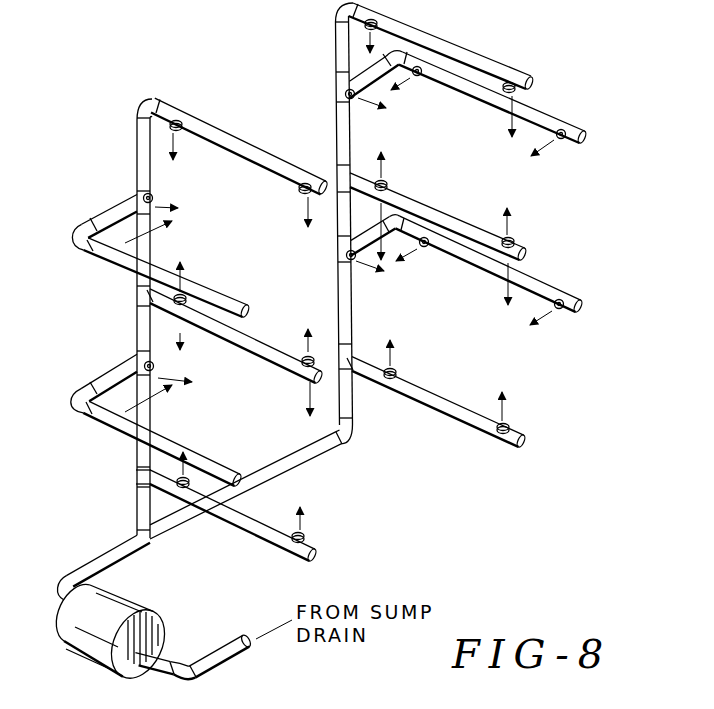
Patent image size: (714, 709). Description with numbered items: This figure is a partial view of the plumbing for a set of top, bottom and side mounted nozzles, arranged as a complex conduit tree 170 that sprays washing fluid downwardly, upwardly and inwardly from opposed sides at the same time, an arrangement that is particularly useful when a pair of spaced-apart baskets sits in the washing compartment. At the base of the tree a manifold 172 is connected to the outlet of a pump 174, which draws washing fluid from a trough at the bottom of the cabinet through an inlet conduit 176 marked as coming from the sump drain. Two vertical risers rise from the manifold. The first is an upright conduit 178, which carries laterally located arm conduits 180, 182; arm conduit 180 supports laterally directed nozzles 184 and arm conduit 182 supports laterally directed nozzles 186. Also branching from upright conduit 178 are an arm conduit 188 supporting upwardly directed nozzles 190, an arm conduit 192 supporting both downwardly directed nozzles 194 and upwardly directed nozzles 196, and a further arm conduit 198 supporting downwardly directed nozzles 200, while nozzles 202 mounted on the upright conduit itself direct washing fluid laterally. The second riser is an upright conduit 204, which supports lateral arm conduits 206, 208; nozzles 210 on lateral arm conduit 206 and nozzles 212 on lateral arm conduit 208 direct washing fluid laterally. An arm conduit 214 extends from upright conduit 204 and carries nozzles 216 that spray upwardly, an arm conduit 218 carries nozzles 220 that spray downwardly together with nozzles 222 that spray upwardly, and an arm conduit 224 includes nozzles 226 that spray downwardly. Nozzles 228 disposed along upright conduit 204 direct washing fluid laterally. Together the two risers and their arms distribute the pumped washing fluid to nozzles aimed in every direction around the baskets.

The complex conduit tree 170 is at (338, 458).
The manifold conduit 172 is at (188, 522).
The pump 174 is at (90, 654).
The inlet conduit 176 is at (228, 661).
The upright conduit 178 is at (151, 416).
The arm conduit 180 is at (118, 429).
The arm conduit 182 is at (113, 246).
The laterally directed nozzles 184 is at (100, 407).
The laterally directed nozzles 186 is at (98, 253).
The arm conduit 188 is at (266, 539).
The upwardly directed nozzles 190 is at (190, 488).
The arm conduit 192 is at (264, 345).
The downwardly directed nozzles 194 is at (180, 306).
The upwardly directed nozzles 196 is at (157, 298).
The arm conduit 198 is at (220, 129).
The downwardly directed nozzles 200 is at (180, 130).
The nozzles 202 is at (153, 199).
The upright conduit 204 is at (338, 284).
The lateral arm conduit 206 is at (548, 282).
The lateral arm conduit 208 is at (554, 118).
The nozzles 210 is at (427, 250).
The nozzles 212 is at (421, 75).
The arm conduit 214 is at (506, 438).
The nozzles 216 is at (397, 371).
The arm conduit 218 is at (482, 229).
The nozzles 220 is at (398, 214).
The nozzles 222 is at (387, 187).
The arm conduit 224 is at (481, 58).
The nozzles 226 is at (506, 92).
The nozzles 228 is at (345, 94).